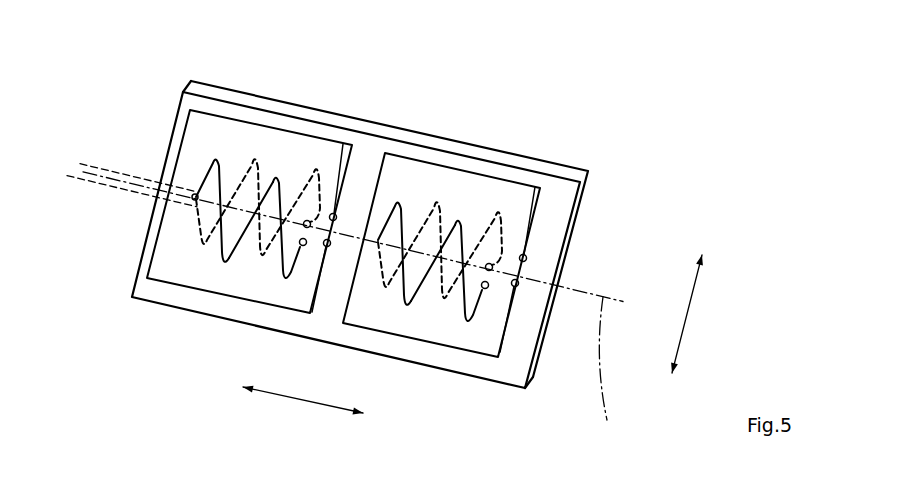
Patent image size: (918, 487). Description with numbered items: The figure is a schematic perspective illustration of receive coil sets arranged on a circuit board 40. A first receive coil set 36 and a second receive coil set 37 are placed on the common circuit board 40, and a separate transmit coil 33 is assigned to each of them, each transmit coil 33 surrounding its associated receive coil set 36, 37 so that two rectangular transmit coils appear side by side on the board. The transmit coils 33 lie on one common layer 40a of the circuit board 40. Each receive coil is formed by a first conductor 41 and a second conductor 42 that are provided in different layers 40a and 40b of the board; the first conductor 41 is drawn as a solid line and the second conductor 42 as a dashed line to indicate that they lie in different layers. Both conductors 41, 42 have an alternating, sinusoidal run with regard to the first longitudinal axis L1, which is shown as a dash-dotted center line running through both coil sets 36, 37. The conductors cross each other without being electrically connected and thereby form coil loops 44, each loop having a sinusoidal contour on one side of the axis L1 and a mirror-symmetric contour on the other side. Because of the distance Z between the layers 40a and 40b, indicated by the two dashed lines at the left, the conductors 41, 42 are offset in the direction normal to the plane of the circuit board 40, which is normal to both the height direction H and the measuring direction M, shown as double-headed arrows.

The transmit coil 33 is at (294, 132).
The first receive coil set 36 is at (205, 268).
The second receive coil set 37 is at (438, 320).
The circuit board 40 is at (430, 275).
The layer of the circuit board 40a is at (523, 379).
The layer of the circuit board 40b is at (582, 165).
The first conductor 41 is at (382, 243).
The second conductor 42 is at (432, 193).
The coil loop 44 is at (382, 243).
The distance of the layers Z is at (130, 145).
The measuring direction M is at (298, 400).
The height direction H is at (688, 318).
The first longitudinal axis L1 is at (616, 367).